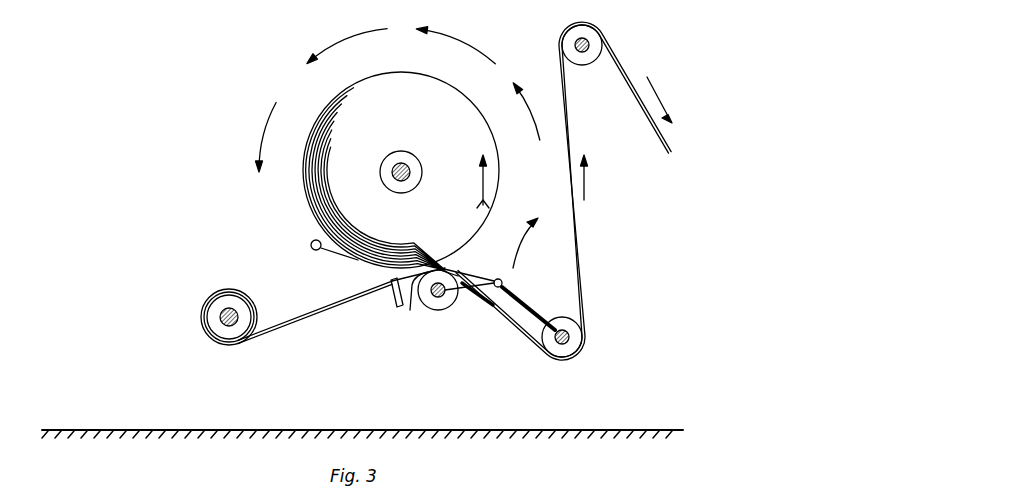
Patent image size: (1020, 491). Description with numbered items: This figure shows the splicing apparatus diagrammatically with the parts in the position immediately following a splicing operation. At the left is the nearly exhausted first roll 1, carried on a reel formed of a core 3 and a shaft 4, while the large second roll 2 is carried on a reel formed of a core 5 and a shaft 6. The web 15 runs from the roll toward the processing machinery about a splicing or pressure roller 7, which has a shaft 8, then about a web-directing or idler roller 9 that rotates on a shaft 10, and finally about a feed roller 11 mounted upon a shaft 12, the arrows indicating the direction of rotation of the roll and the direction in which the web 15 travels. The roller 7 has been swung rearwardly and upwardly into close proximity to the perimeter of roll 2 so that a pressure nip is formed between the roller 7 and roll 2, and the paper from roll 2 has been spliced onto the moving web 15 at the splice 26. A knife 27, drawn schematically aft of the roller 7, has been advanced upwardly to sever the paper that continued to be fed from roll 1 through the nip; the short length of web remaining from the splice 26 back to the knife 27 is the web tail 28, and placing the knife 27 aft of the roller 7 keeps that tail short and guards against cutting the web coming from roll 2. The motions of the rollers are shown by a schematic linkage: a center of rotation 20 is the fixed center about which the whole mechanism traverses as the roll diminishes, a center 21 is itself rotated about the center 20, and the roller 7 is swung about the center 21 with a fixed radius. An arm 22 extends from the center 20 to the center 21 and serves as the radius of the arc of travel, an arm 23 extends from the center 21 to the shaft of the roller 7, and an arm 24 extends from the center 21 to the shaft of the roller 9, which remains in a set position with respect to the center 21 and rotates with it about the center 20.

The first roll 1 is at (222, 292).
The second roll 2 is at (398, 83).
The core 3 is at (212, 328).
The shaft 4 is at (228, 327).
The core 5 is at (407, 152).
The shaft 6 is at (412, 173).
The splicing or pressure roller 7 is at (440, 312).
The shaft 8 is at (445, 300).
The web-directing or idler roller 9 is at (573, 335).
The shaft 10 is at (567, 327).
The feed roller 11 is at (598, 40).
The shaft 12 is at (583, 53).
The web 15 is at (580, 243).
The center of rotation 20 is at (311, 248).
The center 21 is at (503, 280).
The arm 22 is at (470, 285).
The arm 23 is at (475, 288).
The arm 24 is at (527, 303).
The splice 26 is at (482, 305).
The knife 27 is at (390, 302).
The web tail 28 is at (412, 300).